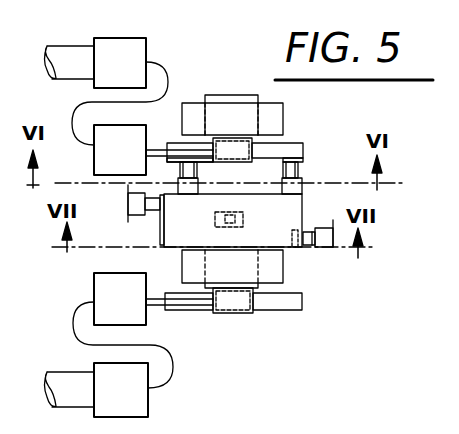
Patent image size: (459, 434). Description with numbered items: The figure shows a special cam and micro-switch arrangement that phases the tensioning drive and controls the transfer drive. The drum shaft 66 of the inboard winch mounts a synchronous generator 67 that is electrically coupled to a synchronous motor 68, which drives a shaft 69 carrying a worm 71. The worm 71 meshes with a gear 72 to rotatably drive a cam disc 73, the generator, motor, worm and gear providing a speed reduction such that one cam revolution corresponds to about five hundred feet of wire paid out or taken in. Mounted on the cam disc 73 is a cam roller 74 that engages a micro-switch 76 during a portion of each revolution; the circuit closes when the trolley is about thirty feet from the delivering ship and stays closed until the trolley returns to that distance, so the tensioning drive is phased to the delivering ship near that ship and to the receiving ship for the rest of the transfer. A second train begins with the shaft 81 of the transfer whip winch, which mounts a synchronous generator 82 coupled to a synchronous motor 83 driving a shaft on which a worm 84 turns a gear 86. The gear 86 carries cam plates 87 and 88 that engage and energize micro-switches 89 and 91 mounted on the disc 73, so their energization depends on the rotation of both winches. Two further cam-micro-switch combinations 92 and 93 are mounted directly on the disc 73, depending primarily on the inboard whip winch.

The drum shaft 66 is at (64, 375).
The synchronous generator 67 is at (140, 400).
The synchronous motor 68 is at (107, 285).
The shaft 69 is at (157, 305).
The worm 71 is at (243, 300).
The gear 72 is at (293, 302).
The cam disc 73 is at (282, 224).
The cam roller 74 is at (298, 249).
The micro-switch 76 is at (325, 228).
The shaft 81 is at (71, 57).
The synchronous generator 82 is at (133, 52).
The synchronous motor 83 is at (102, 165).
The worm 84 is at (235, 157).
The gear 86 is at (293, 150).
The cam plate 87 is at (178, 162).
The cam plate 88 is at (300, 162).
The micro-switch 89 is at (192, 187).
The micro-switch 91 is at (297, 190).
The cam-micro-switch combination 92 is at (135, 205).
The cam-micro-switch combination 93 is at (215, 225).